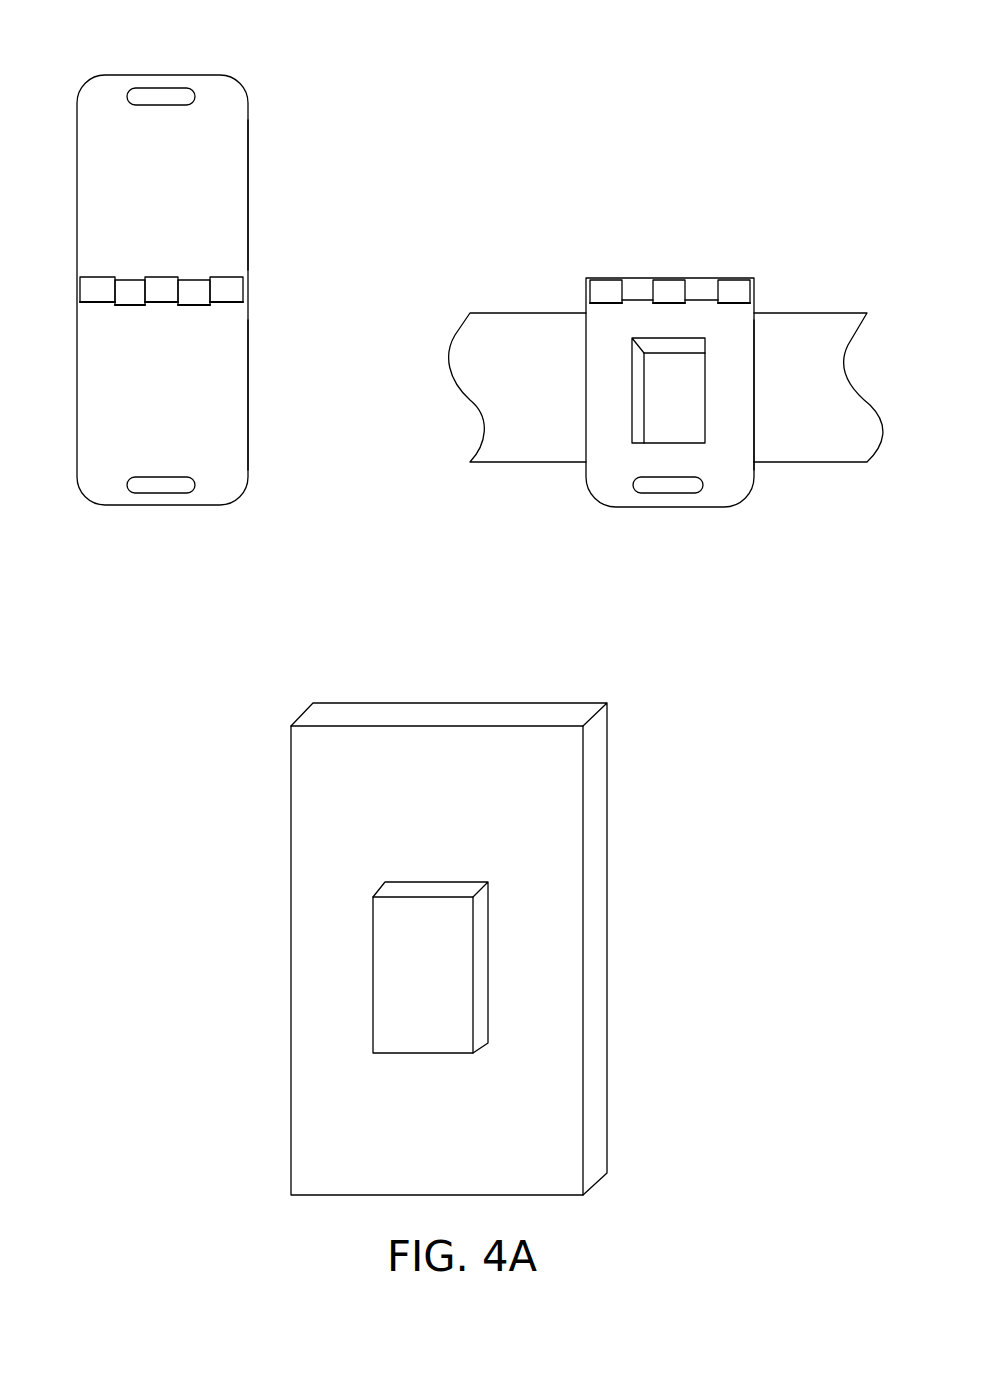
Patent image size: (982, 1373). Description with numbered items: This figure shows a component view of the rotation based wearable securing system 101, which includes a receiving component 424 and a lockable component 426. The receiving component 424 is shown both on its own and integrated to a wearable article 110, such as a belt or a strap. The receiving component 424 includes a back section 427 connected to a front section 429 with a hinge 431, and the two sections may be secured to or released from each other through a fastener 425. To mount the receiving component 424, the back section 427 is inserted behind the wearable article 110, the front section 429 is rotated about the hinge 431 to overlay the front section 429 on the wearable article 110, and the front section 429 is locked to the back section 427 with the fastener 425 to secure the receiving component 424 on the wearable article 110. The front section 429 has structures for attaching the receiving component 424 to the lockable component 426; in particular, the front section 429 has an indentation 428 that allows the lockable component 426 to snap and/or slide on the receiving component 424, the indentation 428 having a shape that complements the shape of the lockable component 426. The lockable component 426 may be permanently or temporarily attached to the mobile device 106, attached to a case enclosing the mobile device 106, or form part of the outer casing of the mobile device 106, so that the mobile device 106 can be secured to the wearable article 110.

The receiving component 424 is at (39, 25).
The front section 429 is at (248, 183).
The back section 427 is at (248, 400).
The hinge 431 is at (248, 293).
The fastener 425 is at (162, 487).
The rotation based wearable securing system 101 is at (858, 178).
The wearable article 110 is at (508, 313).
The indentation 428 is at (705, 410).
The mobile device 106 is at (308, 813).
The lockable component 426 is at (389, 977).